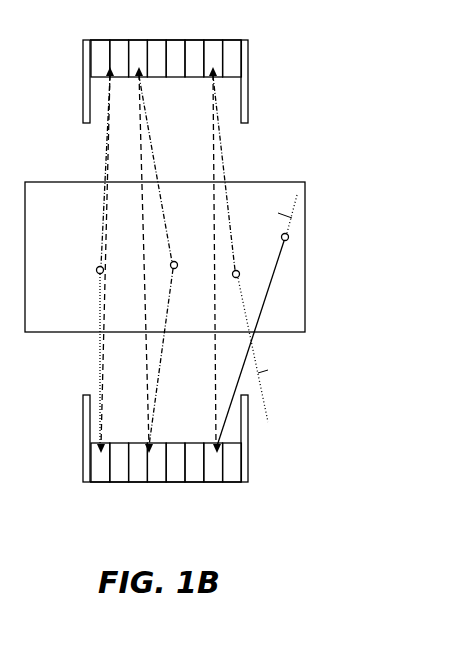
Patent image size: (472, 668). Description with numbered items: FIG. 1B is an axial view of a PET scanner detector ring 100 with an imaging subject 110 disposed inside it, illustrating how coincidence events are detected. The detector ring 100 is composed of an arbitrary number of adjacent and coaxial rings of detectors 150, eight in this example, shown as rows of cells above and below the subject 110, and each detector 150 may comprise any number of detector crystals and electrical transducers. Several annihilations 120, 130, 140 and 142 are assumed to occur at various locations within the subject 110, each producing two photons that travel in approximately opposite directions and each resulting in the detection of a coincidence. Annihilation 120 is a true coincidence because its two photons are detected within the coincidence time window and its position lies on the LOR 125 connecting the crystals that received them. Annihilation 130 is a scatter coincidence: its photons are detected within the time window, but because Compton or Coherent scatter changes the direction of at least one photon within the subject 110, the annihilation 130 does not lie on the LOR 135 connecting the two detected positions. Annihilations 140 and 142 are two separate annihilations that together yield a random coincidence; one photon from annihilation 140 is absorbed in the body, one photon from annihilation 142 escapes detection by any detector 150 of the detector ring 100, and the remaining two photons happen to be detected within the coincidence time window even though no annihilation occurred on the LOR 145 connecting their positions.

The detector ring 100 is at (176, 35).
The imaging subject 110 is at (28, 181).
The annihilation 120 is at (97, 266).
The LOR 125 is at (107, 207).
The annihilation 130 is at (177, 268).
The LOR 135 is at (144, 370).
The annihilation 140 is at (288, 241).
The annihilation 142 is at (239, 272).
The LOR 145 is at (213, 348).
The detector 150 is at (155, 78).